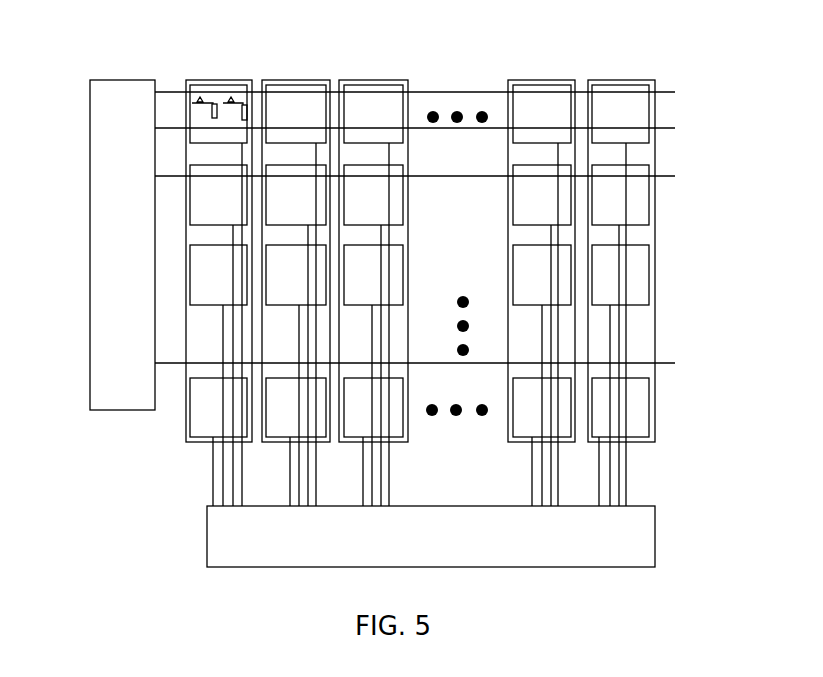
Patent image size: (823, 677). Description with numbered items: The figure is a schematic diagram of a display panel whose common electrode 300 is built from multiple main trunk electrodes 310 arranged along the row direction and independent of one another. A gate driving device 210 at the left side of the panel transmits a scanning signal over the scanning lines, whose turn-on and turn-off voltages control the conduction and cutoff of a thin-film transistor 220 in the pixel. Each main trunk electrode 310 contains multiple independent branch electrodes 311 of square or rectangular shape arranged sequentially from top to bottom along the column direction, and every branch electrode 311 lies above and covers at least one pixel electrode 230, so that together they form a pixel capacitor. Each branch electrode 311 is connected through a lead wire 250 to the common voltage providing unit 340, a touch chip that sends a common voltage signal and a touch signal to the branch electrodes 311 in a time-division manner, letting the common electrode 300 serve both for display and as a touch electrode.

The gate driving device 210 is at (90, 130).
The thin-film transistor 220 is at (198, 97).
The pixel electrode 230 is at (213, 105).
The lead wire 250 is at (223, 453).
The common electrode 300 is at (637, 274).
The main trunk electrode 310 is at (360, 82).
The branch electrode 311 is at (295, 98).
The common voltage providing unit 340 is at (642, 537).